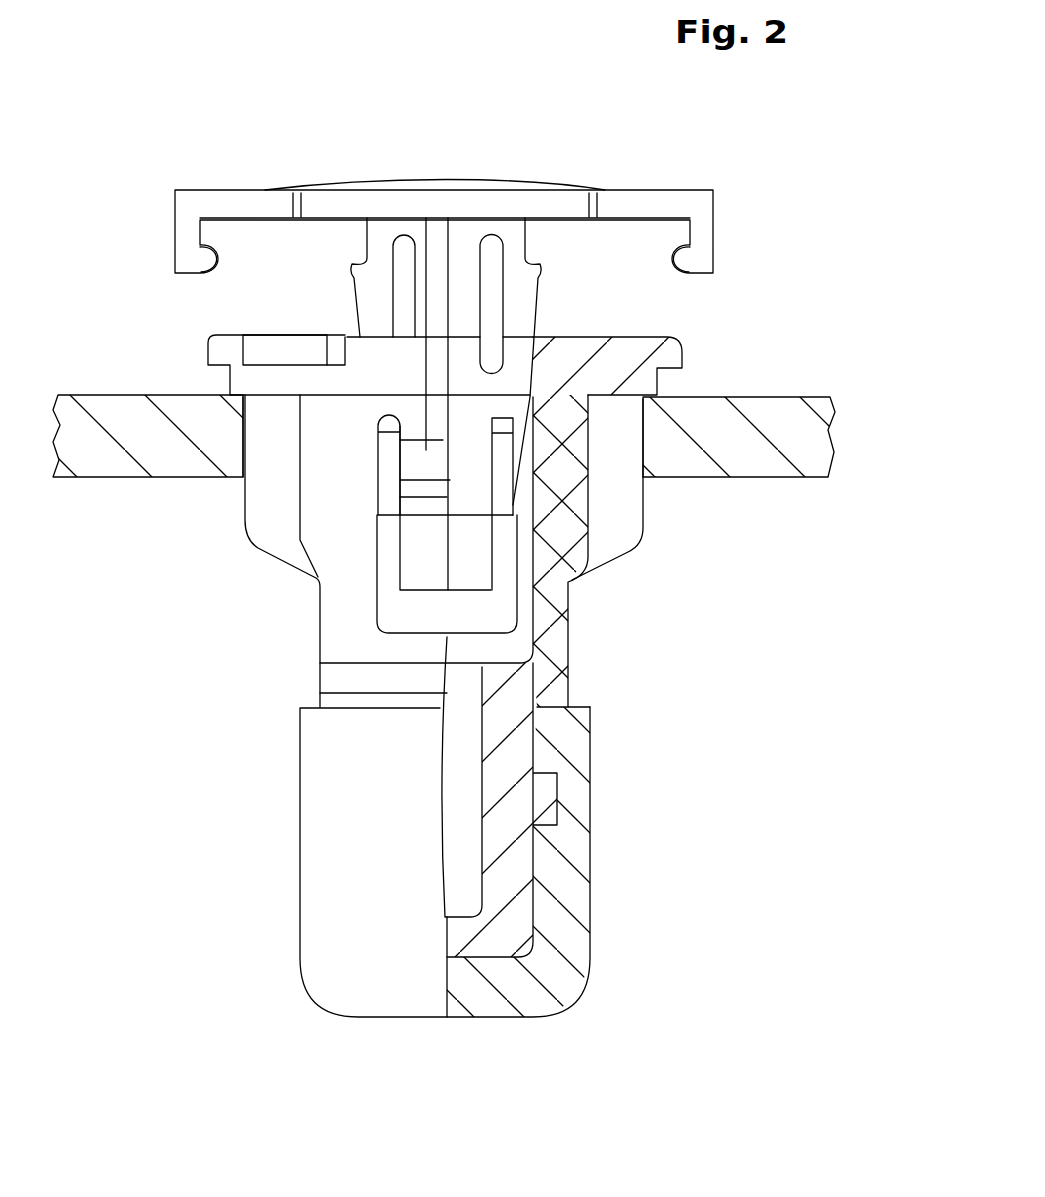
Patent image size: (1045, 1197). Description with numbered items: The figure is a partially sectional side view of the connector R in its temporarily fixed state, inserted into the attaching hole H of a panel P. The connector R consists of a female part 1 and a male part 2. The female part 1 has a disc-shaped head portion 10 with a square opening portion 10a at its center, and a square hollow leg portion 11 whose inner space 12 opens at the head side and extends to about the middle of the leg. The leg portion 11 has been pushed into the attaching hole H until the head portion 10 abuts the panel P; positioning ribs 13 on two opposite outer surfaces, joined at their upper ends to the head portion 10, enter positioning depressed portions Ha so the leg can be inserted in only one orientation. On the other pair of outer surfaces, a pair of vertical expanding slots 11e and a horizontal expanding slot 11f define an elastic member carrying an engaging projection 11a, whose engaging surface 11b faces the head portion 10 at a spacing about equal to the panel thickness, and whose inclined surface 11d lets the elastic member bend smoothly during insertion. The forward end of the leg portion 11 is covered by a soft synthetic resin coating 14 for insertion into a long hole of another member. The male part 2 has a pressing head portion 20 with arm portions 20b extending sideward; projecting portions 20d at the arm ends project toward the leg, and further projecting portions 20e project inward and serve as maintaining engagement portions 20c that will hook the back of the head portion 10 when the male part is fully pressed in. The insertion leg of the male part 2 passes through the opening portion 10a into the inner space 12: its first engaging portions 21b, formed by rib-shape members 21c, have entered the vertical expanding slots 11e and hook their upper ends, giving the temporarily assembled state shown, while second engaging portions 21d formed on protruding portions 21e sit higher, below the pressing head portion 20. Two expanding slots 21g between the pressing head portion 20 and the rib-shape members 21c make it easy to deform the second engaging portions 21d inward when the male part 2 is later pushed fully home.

The connector R is at (521, 160).
The female part 1 is at (422, 560).
The male part 2 is at (447, 230).
The head portion 10 is at (469, 500).
The opening portion 10a is at (538, 360).
The leg portion 11 is at (422, 560).
The engaging projection 11a is at (385, 545).
The engaging surface 11b is at (424, 235).
The inclined surface 11d is at (413, 570).
The vertical expanding slot 11e is at (377, 575).
The horizontal expanding slot 11f is at (405, 618).
The inner space 12 is at (530, 605).
The positioning rib 13 is at (260, 487).
The coating 14 is at (572, 956).
The pressing head portion 20 is at (458, 222).
The arm portion 20b is at (231, 190).
The maintaining engagement portion 20c is at (458, 291).
The projecting portion 20d is at (175, 240).
The projecting portion 20e is at (207, 270).
The first engaging portion 21b is at (426, 522).
The rib-shape member 21c is at (372, 468).
The second engaging portion 21d is at (444, 361).
The protruding portion 21e is at (352, 264).
The expanding slot 21g is at (400, 245).
The attaching hole H is at (435, 467).
The positioning depressed portion Ha is at (240, 440).
The panel P is at (812, 452).